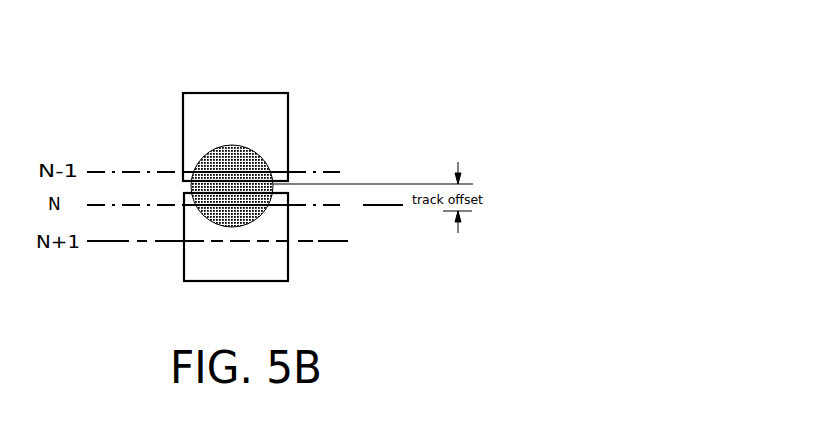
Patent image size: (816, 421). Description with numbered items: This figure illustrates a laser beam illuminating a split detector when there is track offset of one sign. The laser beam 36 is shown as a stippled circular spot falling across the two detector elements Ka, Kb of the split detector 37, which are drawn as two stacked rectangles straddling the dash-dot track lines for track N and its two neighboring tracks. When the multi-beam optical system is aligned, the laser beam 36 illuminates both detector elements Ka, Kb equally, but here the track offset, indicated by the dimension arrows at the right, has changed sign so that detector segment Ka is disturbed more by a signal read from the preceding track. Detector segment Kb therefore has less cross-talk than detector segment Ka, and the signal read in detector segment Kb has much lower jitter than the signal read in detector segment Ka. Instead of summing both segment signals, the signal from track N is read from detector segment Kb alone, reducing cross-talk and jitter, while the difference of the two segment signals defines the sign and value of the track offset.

The laser beam 36 is at (232, 144).
The split detector 37 is at (270, 159).
The detector element Ka is at (288, 123).
The detector element Kb is at (288, 265).